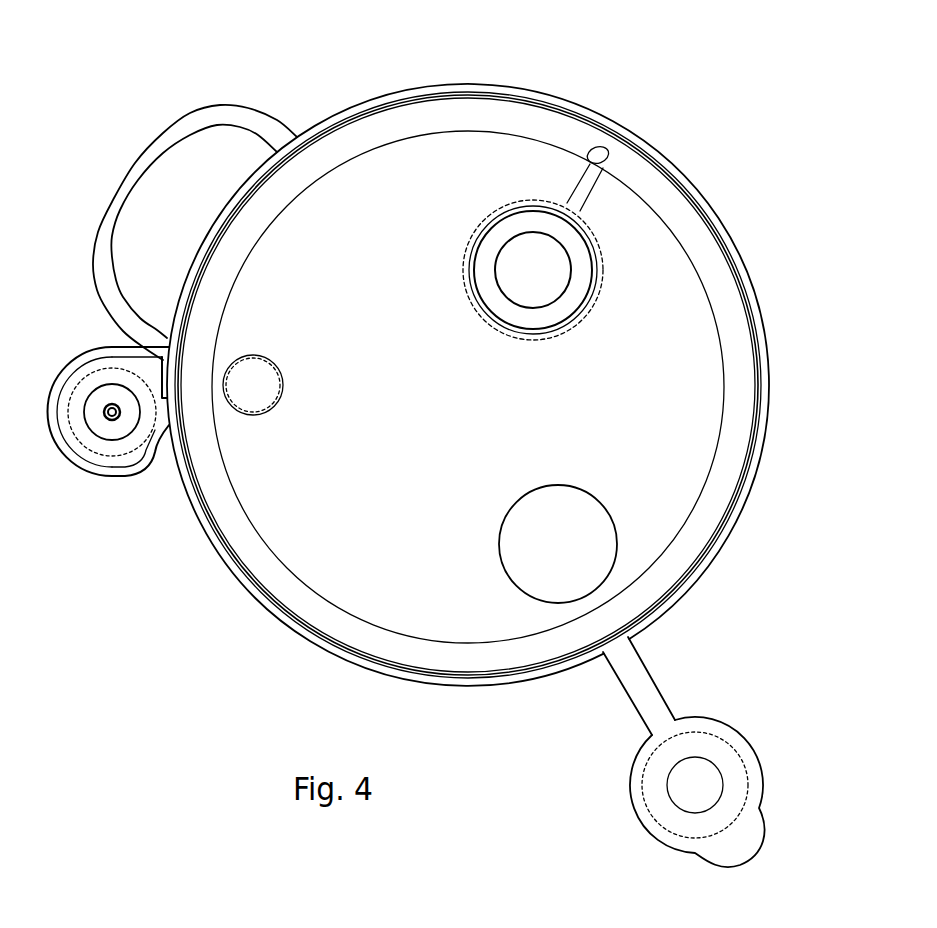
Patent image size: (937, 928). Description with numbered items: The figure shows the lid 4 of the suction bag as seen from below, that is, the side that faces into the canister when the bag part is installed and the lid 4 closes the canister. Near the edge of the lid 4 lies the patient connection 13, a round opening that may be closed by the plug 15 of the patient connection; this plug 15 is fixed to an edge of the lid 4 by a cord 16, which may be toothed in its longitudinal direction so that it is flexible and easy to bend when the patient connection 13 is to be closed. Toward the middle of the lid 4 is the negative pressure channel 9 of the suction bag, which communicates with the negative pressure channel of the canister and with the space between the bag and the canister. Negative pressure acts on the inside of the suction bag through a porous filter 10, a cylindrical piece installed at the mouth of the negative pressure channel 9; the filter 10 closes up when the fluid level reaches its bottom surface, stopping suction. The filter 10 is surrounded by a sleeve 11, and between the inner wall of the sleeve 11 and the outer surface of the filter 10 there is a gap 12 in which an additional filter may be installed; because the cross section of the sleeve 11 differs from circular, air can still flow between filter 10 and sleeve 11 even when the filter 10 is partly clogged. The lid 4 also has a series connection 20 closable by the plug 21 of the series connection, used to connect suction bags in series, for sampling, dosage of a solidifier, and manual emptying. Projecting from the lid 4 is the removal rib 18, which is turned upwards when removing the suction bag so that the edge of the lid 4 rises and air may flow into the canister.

The lid 4 is at (423, 122).
The negative pressure channel of the suction bag 9 is at (602, 152).
The filter 10 is at (555, 263).
The sleeve 11 is at (590, 288).
The gap 12 is at (555, 312).
The patient connection 13 is at (250, 388).
The plug of the patient connection 15 is at (93, 443).
The cord 16 is at (112, 473).
The removal rib 18 is at (133, 190).
The series connection 20 is at (572, 567).
The plug of the series connection 21 is at (695, 785).